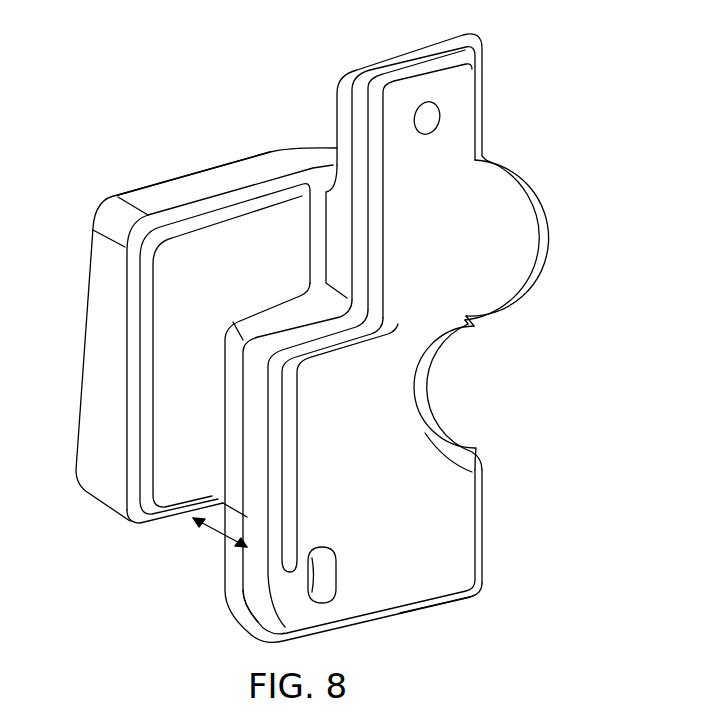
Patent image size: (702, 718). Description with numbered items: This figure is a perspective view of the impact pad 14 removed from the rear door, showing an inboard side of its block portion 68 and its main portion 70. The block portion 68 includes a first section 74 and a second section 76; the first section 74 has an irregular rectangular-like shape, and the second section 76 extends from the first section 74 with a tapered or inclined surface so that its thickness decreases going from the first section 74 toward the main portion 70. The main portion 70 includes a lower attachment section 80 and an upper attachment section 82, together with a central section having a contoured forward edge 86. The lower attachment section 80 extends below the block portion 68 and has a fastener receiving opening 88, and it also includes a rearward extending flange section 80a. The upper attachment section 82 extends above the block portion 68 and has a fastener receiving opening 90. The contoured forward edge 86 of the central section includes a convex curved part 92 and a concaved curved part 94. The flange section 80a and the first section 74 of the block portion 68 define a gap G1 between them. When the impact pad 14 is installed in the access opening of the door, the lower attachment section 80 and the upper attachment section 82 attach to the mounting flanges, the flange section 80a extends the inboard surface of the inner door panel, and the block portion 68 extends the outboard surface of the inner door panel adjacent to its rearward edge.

The impact pad 14 is at (530, 72).
The block portion 68 is at (102, 381).
The main portion 70 is at (436, 520).
The first section 74 is at (175, 190).
The second section 76 is at (298, 148).
The lower attachment section 80 is at (427, 578).
The flange section 80a is at (240, 596).
The upper attachment section 82 is at (440, 88).
The contoured forward edge 86 is at (533, 212).
The fastener receiving opening 88 is at (330, 570).
The fastener receiving opening 90 is at (430, 118).
The convex curved part 92 is at (530, 283).
The concaved curved part 94 is at (437, 413).
The gap G1 is at (215, 530).